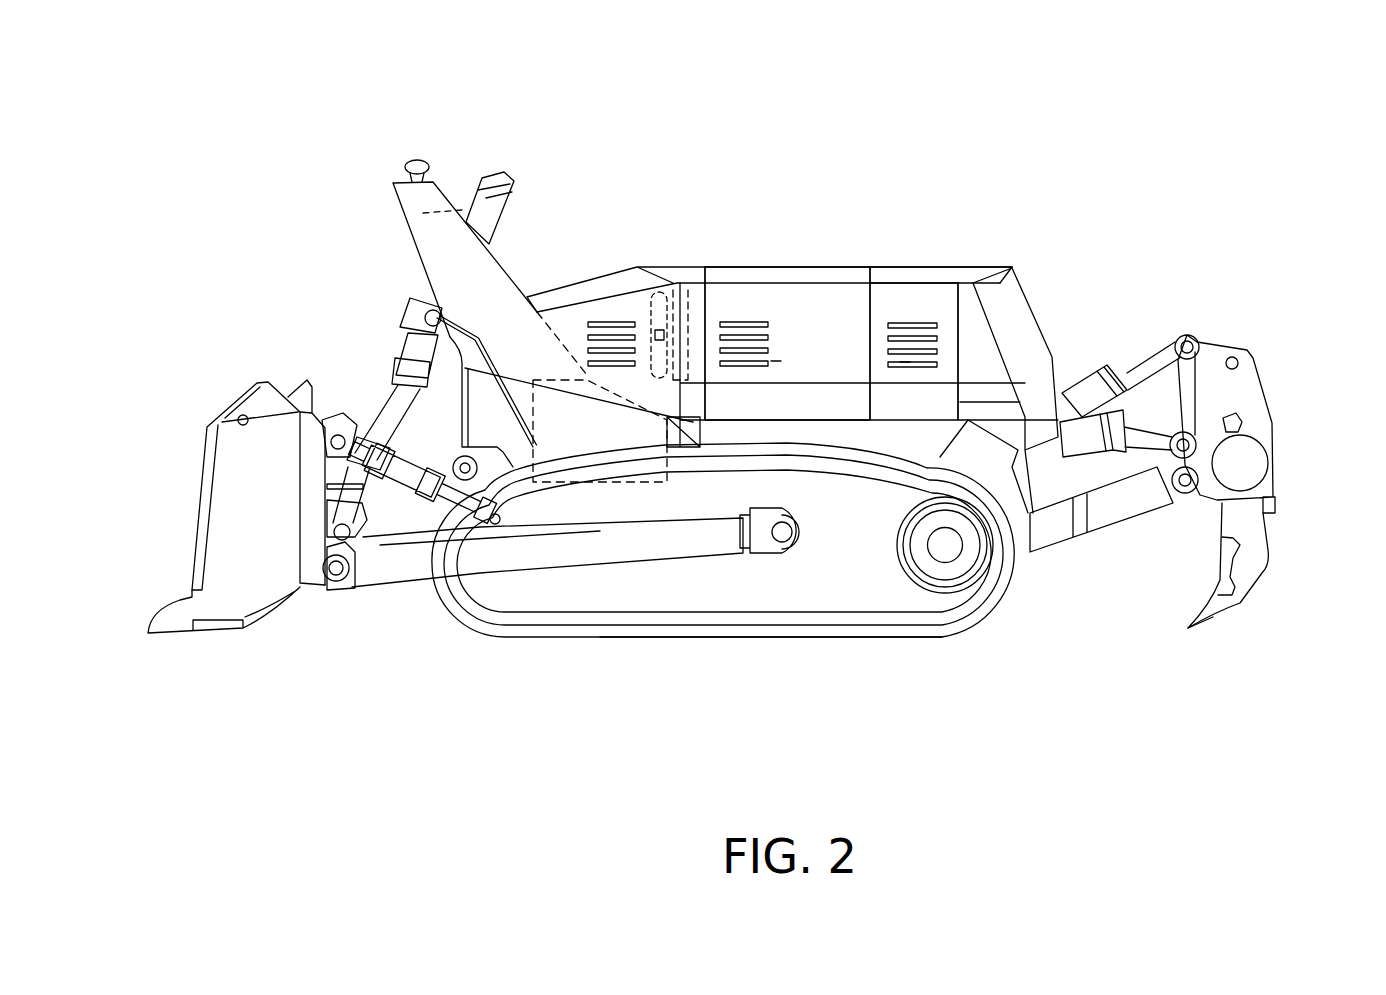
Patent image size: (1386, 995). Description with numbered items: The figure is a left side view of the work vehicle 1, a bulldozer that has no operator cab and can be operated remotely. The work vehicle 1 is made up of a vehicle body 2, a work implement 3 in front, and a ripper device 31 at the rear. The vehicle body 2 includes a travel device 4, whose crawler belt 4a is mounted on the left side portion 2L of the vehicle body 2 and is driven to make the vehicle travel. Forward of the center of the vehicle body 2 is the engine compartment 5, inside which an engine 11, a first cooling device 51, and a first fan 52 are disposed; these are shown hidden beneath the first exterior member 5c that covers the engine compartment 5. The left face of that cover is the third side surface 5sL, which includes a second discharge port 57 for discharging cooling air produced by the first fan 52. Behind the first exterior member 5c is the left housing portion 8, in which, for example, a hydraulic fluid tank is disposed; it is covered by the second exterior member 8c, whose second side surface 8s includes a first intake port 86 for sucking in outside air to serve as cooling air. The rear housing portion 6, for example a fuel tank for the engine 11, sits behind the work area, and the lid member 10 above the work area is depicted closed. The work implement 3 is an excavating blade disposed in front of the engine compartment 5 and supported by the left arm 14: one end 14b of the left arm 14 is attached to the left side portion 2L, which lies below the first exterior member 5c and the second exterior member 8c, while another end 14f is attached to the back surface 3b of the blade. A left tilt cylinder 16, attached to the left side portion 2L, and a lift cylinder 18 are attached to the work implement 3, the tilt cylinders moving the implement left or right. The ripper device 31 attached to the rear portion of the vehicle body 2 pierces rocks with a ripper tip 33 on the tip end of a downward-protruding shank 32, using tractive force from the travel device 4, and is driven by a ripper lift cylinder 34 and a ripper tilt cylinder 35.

The work vehicle 1 is at (888, 124).
The vehicle body 2 is at (1011, 241).
The left side portion 2L is at (890, 593).
The work implement 3 is at (221, 358).
The back surface 3b is at (377, 390).
The travel device 4 is at (995, 634).
The crawler belt 4a is at (740, 630).
The engine compartment 5 is at (590, 292).
The first exterior member 5c is at (537, 310).
The third side surface 5sL is at (613, 378).
The rear housing portion 6 is at (1021, 308).
The left housing portion 8 is at (808, 257).
The second exterior member 8c is at (905, 268).
The second side surface 8s is at (760, 300).
The lid member 10 is at (727, 270).
The engine 11 is at (647, 487).
The left arm 14 is at (547, 548).
The one end 14b is at (782, 553).
The another end 14f is at (325, 587).
The left tilt cylinder 16 is at (412, 478).
The lift cylinder 18 is at (497, 210).
The ripper device 31 is at (1151, 331).
The shank 32 is at (1248, 562).
The ripper tip 33 is at (1208, 613).
The ripper lift cylinder 34 is at (1083, 435).
The ripper tilt cylinder 35 is at (1093, 393).
The first cooling device 51 is at (660, 265).
The first fan 52 is at (640, 268).
The second discharge port 57 is at (602, 367).
The first intake port 86 is at (902, 370).